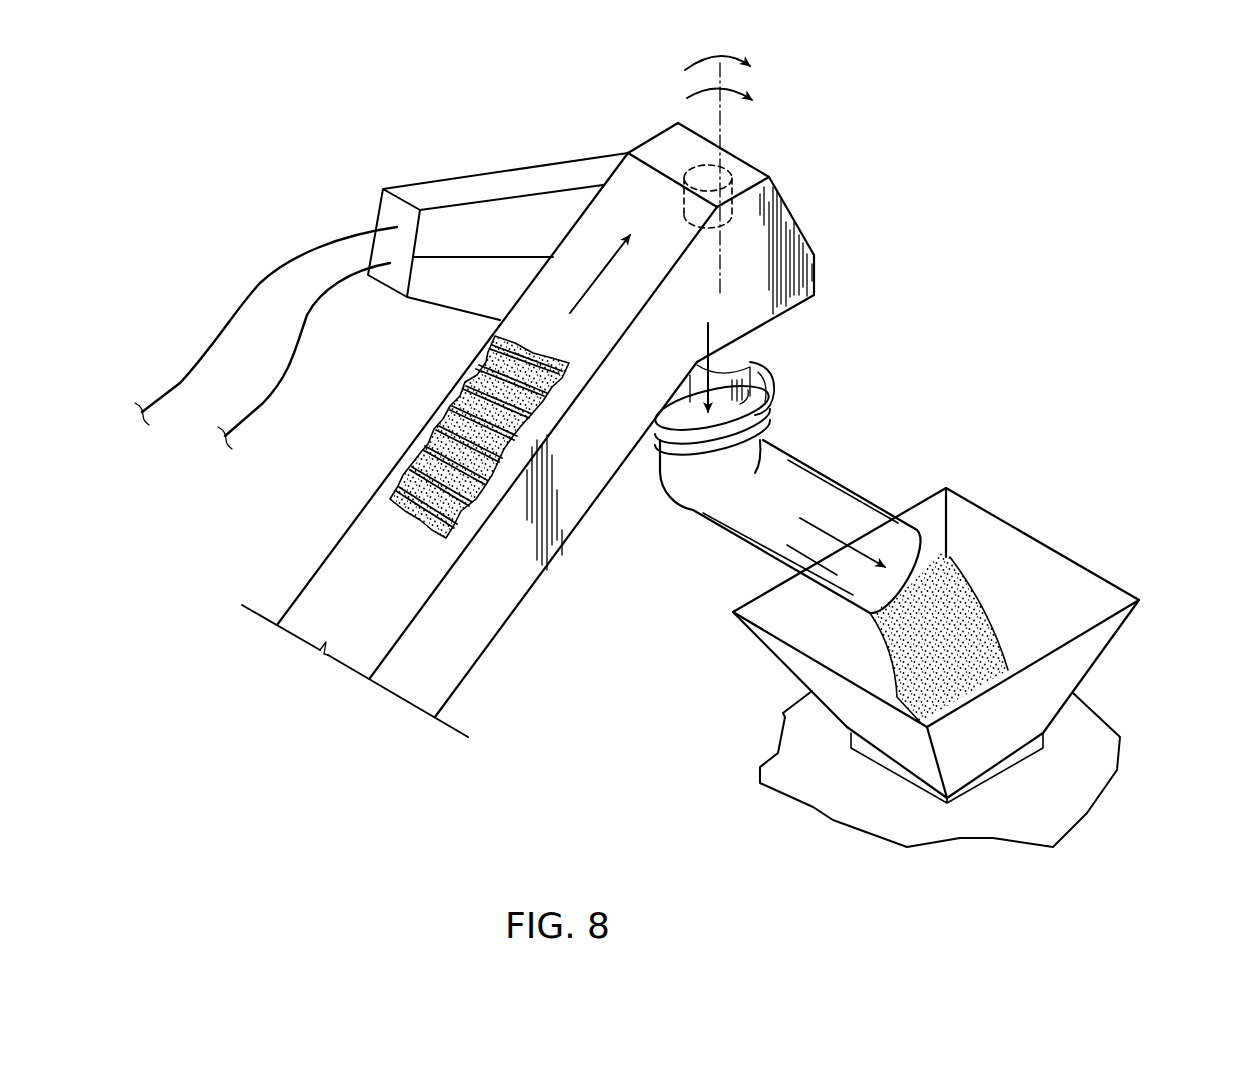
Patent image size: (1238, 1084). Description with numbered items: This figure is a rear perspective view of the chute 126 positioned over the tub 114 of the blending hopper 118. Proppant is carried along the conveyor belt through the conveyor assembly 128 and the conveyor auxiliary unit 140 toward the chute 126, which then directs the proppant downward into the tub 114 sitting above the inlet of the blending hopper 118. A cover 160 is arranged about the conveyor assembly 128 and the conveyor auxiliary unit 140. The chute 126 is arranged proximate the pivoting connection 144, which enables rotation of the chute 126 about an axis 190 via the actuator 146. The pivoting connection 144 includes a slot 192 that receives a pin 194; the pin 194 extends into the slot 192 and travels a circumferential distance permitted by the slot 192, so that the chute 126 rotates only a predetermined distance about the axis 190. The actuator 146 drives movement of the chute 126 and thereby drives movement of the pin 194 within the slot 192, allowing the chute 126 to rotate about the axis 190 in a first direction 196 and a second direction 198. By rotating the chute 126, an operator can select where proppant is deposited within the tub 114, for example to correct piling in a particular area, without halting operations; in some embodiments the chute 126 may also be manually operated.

The tub 114 is at (1040, 538).
The blending hopper 118 is at (780, 757).
The chute 126 is at (833, 478).
The conveyor assembly 128 is at (300, 536).
The conveyor auxiliary unit 140 is at (570, 603).
The pivoting connection 144 is at (768, 358).
The actuator 146 is at (737, 167).
The cover 160 is at (455, 662).
The axis 190 is at (720, 117).
The slot 192 is at (772, 395).
The pin 194 is at (756, 380).
The first direction 196 is at (685, 70).
The second direction 198 is at (687, 98).